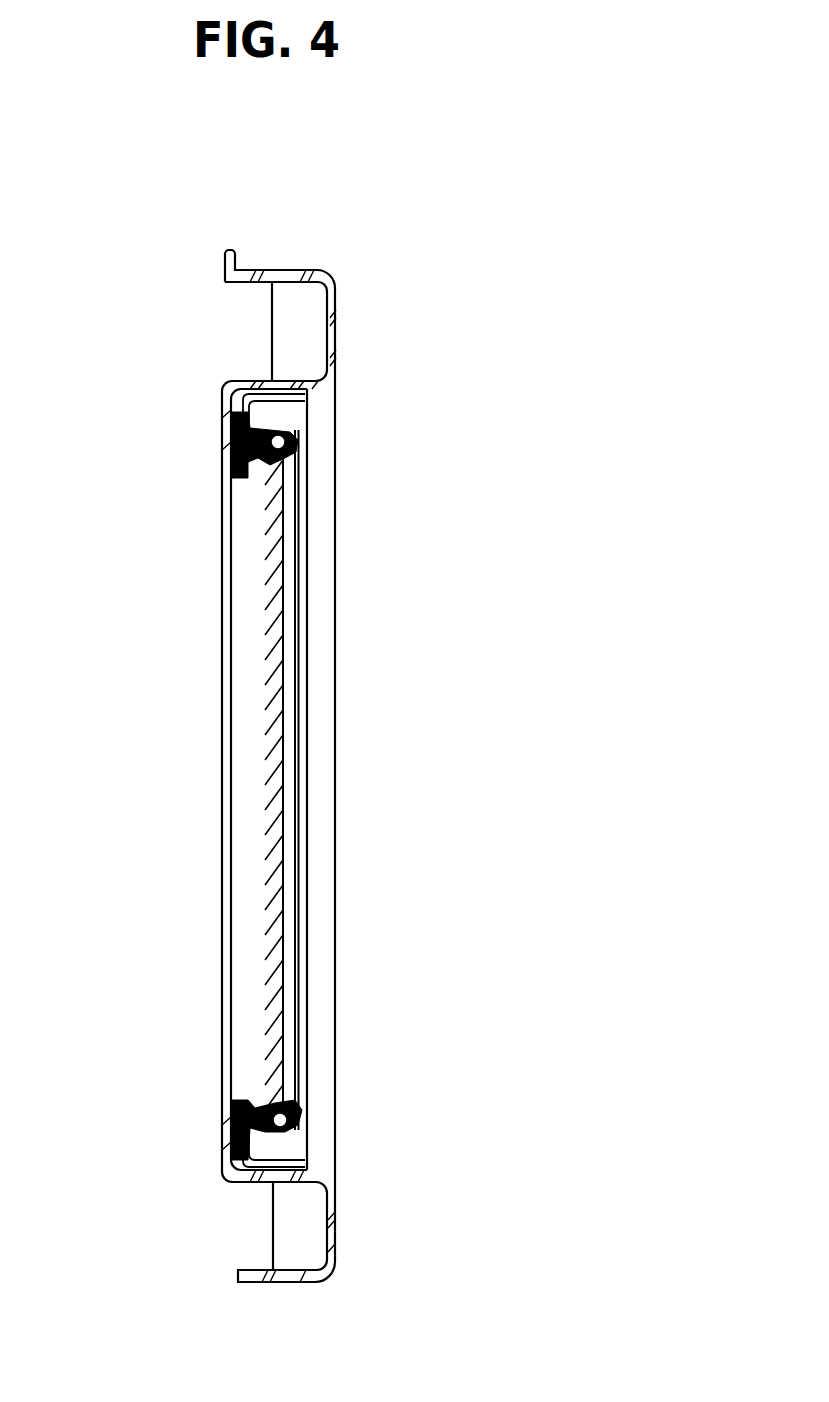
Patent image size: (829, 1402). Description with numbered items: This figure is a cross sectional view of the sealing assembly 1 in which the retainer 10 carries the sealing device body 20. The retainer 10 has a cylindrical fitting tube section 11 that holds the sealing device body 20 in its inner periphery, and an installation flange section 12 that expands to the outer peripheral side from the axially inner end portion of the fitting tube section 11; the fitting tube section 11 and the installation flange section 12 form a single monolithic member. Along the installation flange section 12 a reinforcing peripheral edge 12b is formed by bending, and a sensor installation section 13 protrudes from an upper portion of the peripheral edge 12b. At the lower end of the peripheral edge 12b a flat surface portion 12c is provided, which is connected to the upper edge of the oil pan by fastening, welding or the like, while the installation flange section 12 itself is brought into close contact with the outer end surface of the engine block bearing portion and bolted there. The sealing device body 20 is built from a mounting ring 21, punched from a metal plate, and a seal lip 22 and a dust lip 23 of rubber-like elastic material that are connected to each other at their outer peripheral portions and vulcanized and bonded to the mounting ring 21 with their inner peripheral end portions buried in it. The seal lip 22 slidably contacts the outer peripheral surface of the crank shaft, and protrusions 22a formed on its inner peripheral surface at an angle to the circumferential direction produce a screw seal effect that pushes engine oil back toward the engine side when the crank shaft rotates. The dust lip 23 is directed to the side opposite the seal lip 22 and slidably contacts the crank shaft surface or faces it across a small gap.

The display device 1 is at (180, 416).
The retainer 10 is at (345, 305).
The cylindrical fitting tube section 11 is at (267, 1182).
The installation flange section 12 is at (340, 1220).
The peripheral edge 12b is at (271, 330).
The flat surface portion 12c is at (247, 1282).
The sensor installation section 13 is at (223, 258).
The sealing device body 20 is at (308, 460).
The mounting ring 21 is at (285, 1168).
The seal lip 22 is at (290, 1112).
The protrusions 22a is at (272, 833).
The dust lip 23 is at (245, 1112).